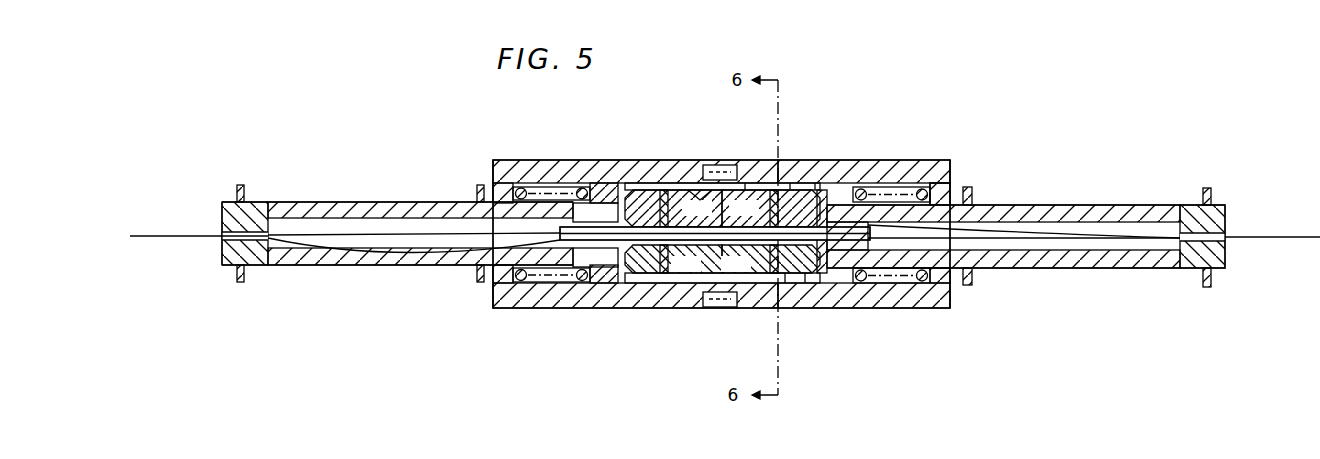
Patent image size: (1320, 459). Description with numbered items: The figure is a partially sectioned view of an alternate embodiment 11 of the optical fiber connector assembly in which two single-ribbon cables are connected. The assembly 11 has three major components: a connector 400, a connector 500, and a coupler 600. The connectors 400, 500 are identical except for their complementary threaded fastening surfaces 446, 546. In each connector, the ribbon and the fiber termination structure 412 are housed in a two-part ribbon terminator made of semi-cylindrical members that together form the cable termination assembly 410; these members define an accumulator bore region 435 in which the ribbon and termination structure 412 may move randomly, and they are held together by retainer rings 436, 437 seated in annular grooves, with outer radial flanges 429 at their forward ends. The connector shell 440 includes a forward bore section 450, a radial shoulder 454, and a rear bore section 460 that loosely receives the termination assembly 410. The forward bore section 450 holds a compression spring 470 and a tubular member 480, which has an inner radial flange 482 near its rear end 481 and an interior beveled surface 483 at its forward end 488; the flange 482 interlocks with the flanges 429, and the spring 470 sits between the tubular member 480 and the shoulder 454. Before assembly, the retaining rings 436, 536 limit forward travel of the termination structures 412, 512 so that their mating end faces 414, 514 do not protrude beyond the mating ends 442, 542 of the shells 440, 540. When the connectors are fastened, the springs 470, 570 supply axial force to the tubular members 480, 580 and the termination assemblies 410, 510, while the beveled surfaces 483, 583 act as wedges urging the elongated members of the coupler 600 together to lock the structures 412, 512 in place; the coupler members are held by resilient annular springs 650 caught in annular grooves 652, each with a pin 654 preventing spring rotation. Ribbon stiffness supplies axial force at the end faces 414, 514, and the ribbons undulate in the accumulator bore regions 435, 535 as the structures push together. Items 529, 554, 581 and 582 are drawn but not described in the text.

The optical fiber connector assembly 11 is at (1070, 362).
The connector 400 is at (935, 161).
The cable termination assembly 410 is at (1150, 270).
The fiber termination structure 412 is at (770, 259).
The mating end face 414 is at (730, 233).
The outer radial flange 429 is at (836, 187).
The accumulator bore region 435 is at (1090, 222).
The retainer ring 436 is at (975, 285).
The retainer ring 437 is at (1210, 288).
The connector shell 440 is at (950, 308).
The mating end 442 is at (706, 168).
The threaded fastening surface 446 is at (727, 165).
The forward bore section 450 is at (905, 183).
The radial shoulder 454 is at (950, 190).
The rear bore section 460 is at (972, 196).
The compression spring 470 is at (890, 187).
The tubular member 480 is at (815, 170).
The rear end 481 is at (872, 292).
The inner radial flange 482 is at (840, 290).
The interior beveled surface 483 is at (805, 290).
The forward end 488 is at (790, 190).
The connector 500 is at (496, 160).
The termination assembly 510 is at (258, 266).
The fiber termination structure 512 is at (673, 259).
The mating end face 514 is at (673, 208).
The lower left block 529 is at (622, 300).
The accumulator bore region 535 is at (335, 222).
The retaining ring 536 is at (478, 275).
The connector shell 540 is at (525, 308).
The mating end 542 is at (745, 183).
The threaded fastening surface 546 is at (692, 165).
The left housing lip 554 is at (500, 186).
The compression spring 570 is at (535, 187).
The tubular member 580 is at (580, 283).
The upper left seal ring 581 is at (580, 189).
The spacer 582 is at (595, 235).
The interior beveled annular surface 583 is at (605, 188).
The coupler 600 is at (705, 306).
The resilient annular spring 650 is at (785, 300).
The annular groove 652 is at (772, 300).
The pin 654 is at (648, 188).